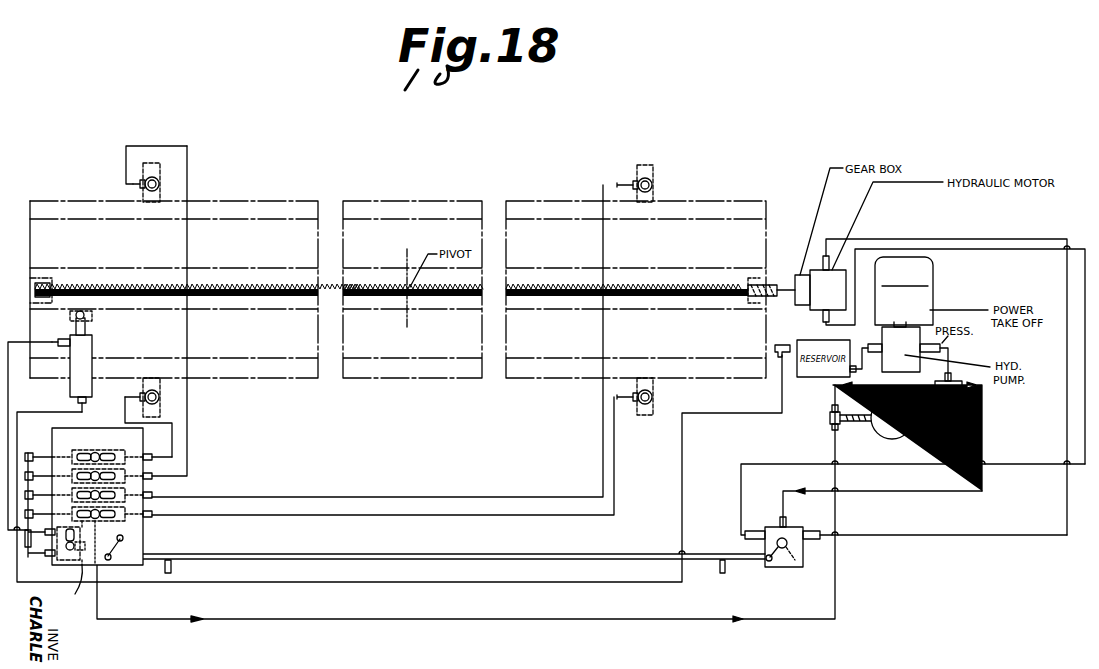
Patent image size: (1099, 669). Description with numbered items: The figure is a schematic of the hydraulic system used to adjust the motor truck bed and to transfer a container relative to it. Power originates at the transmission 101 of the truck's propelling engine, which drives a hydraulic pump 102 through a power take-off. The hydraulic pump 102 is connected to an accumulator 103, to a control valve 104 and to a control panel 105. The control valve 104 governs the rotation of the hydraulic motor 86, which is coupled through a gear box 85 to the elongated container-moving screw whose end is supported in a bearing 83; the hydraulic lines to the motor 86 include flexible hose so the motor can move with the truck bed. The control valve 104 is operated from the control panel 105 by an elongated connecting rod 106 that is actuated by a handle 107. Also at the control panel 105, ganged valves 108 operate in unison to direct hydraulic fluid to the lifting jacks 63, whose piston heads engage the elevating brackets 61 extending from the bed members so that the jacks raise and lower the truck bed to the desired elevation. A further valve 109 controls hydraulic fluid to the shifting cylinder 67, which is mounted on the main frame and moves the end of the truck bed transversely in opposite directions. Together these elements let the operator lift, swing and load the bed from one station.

The elevating bracket 61 is at (176, 157).
The hydraulic jack 63 is at (160, 184).
The hydraulic cylinder 67 is at (88, 352).
The bearing 83 is at (40, 286).
The gear box 85 is at (803, 300).
The hydraulic motor 86 is at (847, 263).
The transmission 101 is at (925, 258).
The hydraulic pump 102 is at (905, 336).
The accumulator 103 is at (878, 438).
The control valve 104 is at (795, 530).
The control panel 105 is at (124, 496).
The connecting rod 106 is at (296, 567).
The handle 107 is at (172, 567).
The ganged valves 108 is at (128, 470).
The valve 109 is at (65, 585).